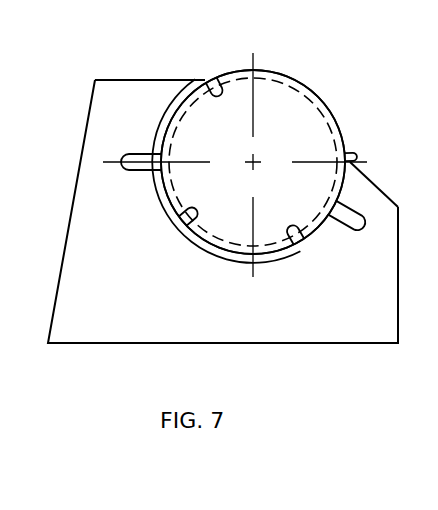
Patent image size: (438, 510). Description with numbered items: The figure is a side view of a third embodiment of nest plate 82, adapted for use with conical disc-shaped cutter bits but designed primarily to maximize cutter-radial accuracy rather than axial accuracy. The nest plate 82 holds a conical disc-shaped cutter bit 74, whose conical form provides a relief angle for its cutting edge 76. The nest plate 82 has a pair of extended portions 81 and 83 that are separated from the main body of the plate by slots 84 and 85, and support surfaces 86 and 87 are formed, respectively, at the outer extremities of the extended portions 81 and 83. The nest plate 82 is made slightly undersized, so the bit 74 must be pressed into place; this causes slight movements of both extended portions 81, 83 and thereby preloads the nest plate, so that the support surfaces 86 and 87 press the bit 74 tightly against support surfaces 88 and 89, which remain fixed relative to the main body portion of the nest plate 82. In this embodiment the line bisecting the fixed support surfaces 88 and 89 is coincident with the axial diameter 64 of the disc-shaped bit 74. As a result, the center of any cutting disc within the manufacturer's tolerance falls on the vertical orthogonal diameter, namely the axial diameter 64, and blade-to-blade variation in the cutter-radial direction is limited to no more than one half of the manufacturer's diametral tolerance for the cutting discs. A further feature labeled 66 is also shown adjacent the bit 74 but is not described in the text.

The axial diameter 64 is at (255, 62).
The notch 66 is at (355, 160).
The cutter bit 74 is at (297, 139).
The cutting edge 76 is at (318, 97).
The extended portion 81 is at (177, 88).
The nest plate 82 is at (118, 295).
The extended portion 83 is at (364, 176).
The slot 84 is at (141, 154).
The slot 85 is at (352, 210).
The support surface 86 is at (222, 84).
The support surface 87 is at (339, 176).
The support surface 88 is at (186, 213).
The support surface 89 is at (294, 238).